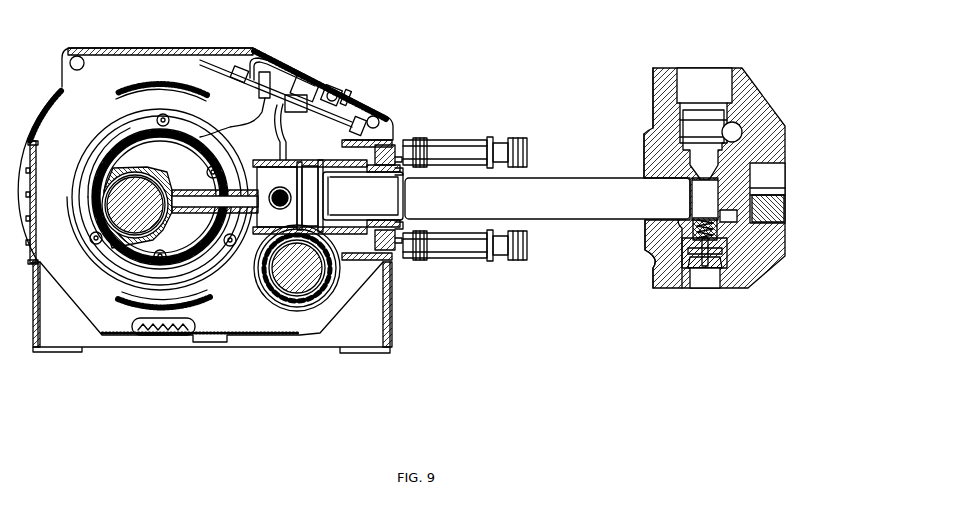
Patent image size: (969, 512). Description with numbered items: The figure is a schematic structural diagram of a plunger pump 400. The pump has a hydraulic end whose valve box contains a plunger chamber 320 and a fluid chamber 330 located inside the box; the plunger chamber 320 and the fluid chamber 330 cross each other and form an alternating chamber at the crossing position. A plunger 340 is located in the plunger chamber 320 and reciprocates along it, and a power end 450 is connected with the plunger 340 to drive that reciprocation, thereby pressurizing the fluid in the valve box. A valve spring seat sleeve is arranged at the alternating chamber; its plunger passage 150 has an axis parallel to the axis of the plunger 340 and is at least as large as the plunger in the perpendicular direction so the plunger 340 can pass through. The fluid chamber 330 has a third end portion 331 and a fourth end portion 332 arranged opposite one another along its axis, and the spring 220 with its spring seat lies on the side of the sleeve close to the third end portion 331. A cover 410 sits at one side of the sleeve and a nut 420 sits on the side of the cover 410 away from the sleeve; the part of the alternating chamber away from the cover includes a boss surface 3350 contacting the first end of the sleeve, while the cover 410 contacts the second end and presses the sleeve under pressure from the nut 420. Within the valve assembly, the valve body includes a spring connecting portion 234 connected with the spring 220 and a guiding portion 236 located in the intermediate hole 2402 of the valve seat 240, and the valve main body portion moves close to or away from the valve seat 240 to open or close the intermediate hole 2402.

The plunger pump 400 is at (437, 224).
The power end 450 is at (238, 312).
The plunger 340 is at (613, 205).
The fourth end portion 332 is at (692, 77).
The fluid chamber 330 is at (700, 110).
The plunger passage 150 is at (703, 192).
The boss surface 3350 is at (677, 170).
The plunger chamber 320 is at (660, 192).
The cover 410 is at (780, 160).
The nut 420 is at (756, 186).
The valve seat 240 is at (690, 290).
The spring connecting portion 234 is at (715, 232).
The intermediate hole 2402 is at (722, 243).
The guiding portion 236 is at (720, 256).
The third end portion 331 is at (701, 278).
The spring 220 is at (678, 258).